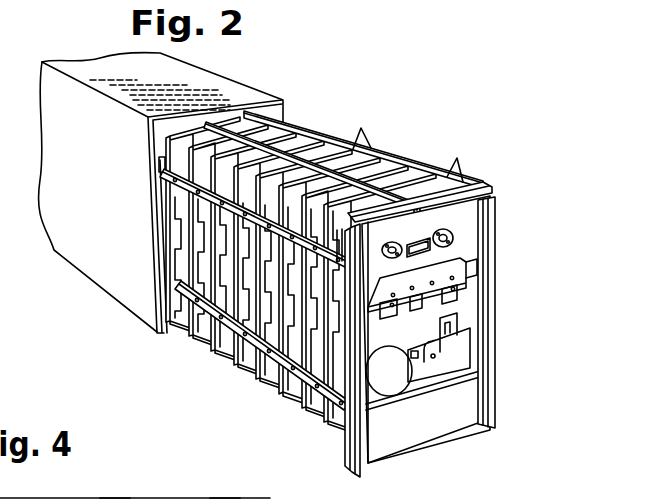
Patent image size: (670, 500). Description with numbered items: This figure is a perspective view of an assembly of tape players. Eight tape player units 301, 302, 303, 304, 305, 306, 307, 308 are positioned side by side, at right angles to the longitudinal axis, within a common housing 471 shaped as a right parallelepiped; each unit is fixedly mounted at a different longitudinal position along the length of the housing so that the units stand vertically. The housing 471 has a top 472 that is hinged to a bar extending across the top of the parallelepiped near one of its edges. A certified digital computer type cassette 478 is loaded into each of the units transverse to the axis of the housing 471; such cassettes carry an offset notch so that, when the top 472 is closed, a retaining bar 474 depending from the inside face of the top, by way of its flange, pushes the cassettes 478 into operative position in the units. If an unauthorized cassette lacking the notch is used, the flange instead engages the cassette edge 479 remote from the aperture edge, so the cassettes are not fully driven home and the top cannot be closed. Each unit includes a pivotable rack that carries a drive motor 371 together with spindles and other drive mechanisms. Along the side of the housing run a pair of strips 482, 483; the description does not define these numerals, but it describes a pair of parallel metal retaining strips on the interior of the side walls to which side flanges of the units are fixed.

The unit 301 is at (412, 428).
The unit 302 is at (312, 423).
The unit 303 is at (285, 400).
The unit 304 is at (257, 386).
The unit 305 is at (233, 368).
The unit 306 is at (210, 355).
The unit 307 is at (192, 340).
The unit 308 is at (174, 322).
The drive motor 371 is at (404, 382).
The housing 471 is at (508, 211).
The top 472 is at (369, 146).
The cassette 478 is at (361, 128).
The upper side rail 482 is at (188, 184).
The lower side rail 483 is at (196, 293).
The retaining bar 474 is at (112, 498).
The edge 479 is at (233, 484).